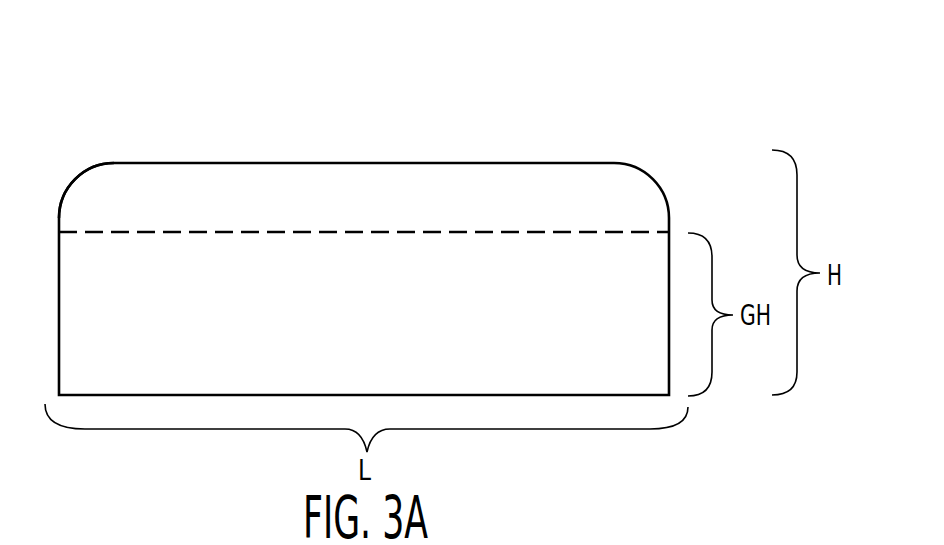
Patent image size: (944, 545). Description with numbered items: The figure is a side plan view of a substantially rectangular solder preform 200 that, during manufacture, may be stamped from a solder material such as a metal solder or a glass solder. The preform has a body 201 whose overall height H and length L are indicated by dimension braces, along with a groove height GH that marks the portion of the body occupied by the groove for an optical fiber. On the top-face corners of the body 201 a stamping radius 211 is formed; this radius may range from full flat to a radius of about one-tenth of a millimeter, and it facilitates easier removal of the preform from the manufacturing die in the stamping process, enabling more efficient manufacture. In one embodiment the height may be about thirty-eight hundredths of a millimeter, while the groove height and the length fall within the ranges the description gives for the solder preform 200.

The solder preform 200 is at (612, 46).
The body 201 is at (353, 138).
The stamping radius 211 is at (78, 181).